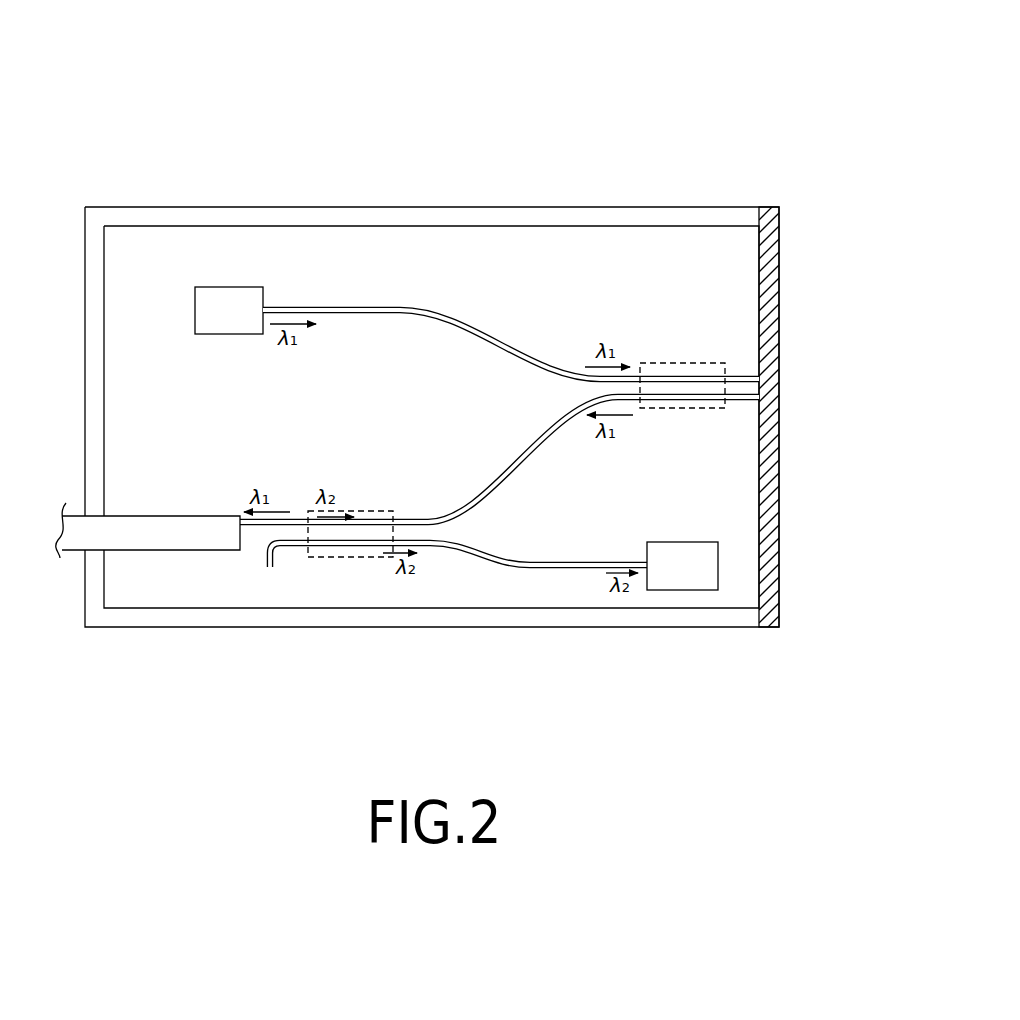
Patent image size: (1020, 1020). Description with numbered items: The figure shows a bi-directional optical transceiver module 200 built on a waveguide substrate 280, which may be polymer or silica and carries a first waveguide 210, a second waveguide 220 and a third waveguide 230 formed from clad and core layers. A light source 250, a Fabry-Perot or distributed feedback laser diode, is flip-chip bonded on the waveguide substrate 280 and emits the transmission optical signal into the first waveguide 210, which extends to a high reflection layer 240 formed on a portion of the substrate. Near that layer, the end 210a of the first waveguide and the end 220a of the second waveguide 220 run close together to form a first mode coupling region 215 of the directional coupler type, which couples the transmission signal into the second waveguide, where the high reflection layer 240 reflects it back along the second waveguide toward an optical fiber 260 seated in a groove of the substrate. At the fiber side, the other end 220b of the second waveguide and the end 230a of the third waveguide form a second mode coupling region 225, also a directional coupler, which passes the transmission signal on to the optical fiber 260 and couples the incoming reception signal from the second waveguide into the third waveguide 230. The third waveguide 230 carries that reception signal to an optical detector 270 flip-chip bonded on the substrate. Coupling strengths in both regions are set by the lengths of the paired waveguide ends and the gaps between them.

The bi-directional optical transceiver module 200 is at (608, 25).
The first waveguide 210 is at (392, 308).
The end of the first waveguide 210a is at (684, 362).
The first mode coupling region 215 is at (706, 362).
The second waveguide 220 is at (508, 448).
The end of the second waveguide 220a is at (694, 410).
The other end of the second waveguide 220b is at (380, 518).
The second mode coupling region 225 is at (353, 511).
The third waveguide 230 is at (517, 568).
The end of the third waveguide 230a is at (350, 558).
The high reflection layer 240 is at (770, 259).
The light source 250 is at (228, 300).
The optical fiber 260 is at (79, 538).
The optical detector 270 is at (690, 582).
The waveguide substrate 280 is at (112, 218).